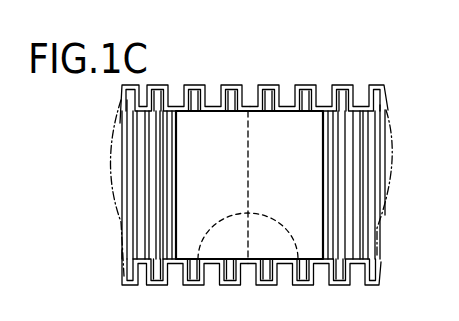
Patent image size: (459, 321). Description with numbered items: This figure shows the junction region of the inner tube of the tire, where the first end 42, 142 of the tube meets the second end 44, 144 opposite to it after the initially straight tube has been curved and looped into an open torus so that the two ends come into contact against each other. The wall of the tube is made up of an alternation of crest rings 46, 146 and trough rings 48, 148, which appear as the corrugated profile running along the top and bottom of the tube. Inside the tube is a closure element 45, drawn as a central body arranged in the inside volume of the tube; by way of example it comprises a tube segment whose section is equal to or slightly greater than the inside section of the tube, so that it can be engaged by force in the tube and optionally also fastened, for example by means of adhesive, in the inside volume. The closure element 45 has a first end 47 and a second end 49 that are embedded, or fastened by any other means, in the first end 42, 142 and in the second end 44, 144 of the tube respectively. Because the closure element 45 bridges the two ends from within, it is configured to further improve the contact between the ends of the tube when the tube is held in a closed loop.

The first end 42 is at (185, 284).
The first end 142 is at (192, 288).
The second end 44 is at (314, 289).
The second end 144 is at (302, 288).
The closure element 45 is at (229, 175).
The crest rings 46 is at (185, 82).
The crest rings 146 is at (230, 84).
The first end of closure element 47 is at (178, 212).
The trough rings 48 is at (319, 76).
The trough rings 148 is at (323, 92).
The second end of closure element 49 is at (323, 207).